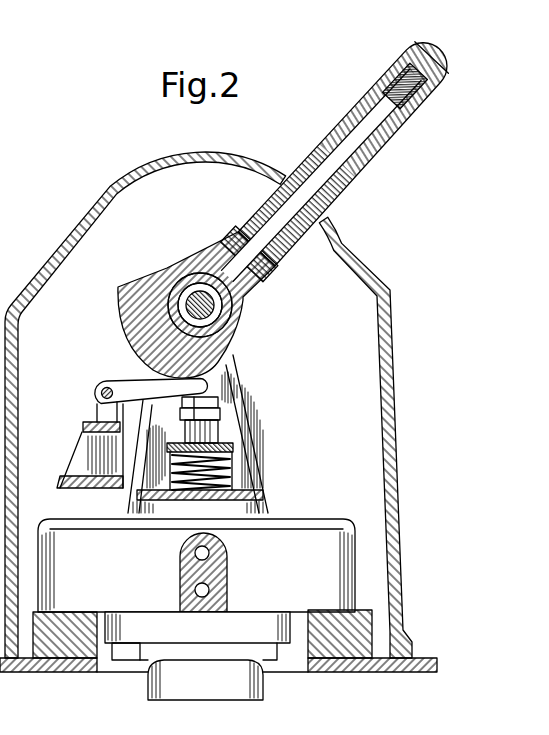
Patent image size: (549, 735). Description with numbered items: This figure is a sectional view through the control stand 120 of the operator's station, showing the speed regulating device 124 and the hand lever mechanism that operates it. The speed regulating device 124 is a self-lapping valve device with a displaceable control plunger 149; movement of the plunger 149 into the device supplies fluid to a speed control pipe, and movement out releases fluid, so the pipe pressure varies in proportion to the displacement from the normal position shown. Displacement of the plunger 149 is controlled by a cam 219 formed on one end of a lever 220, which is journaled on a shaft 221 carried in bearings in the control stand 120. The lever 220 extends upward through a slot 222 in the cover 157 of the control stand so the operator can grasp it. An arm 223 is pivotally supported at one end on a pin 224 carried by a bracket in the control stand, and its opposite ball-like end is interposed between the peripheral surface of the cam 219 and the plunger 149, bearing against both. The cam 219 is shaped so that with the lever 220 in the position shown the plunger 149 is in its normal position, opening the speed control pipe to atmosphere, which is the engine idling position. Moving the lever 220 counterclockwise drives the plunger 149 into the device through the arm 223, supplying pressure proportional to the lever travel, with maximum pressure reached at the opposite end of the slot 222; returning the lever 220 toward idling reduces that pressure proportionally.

The control stand 120 is at (428, 655).
The speed regulating device 124 is at (243, 632).
The control plunger 149 is at (207, 405).
The cover 157 is at (387, 350).
The cam 219 is at (200, 366).
The lever 220 is at (288, 252).
The shaft 221 is at (212, 312).
The slot 222 is at (92, 203).
The arm 223 is at (130, 388).
The pin 224 is at (100, 395).